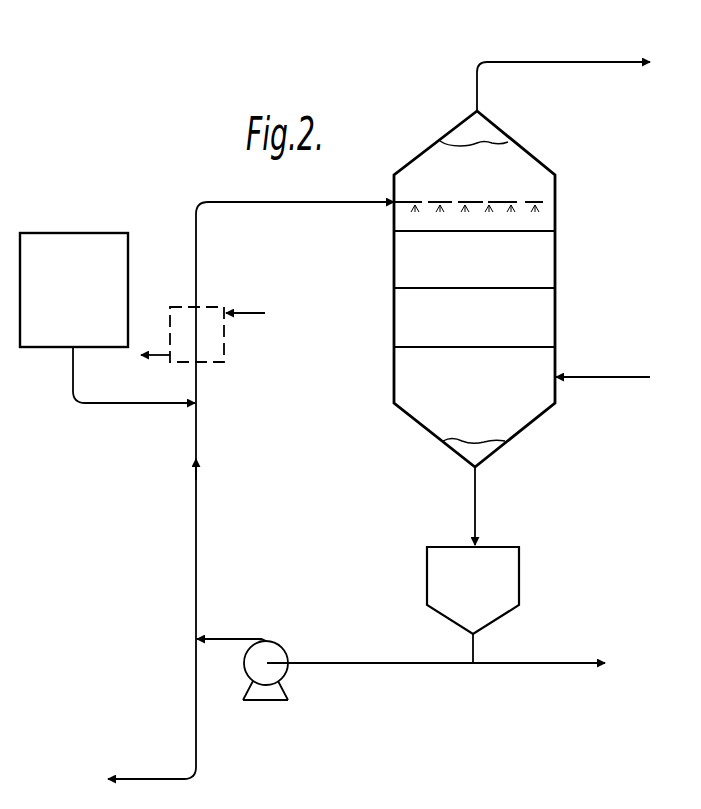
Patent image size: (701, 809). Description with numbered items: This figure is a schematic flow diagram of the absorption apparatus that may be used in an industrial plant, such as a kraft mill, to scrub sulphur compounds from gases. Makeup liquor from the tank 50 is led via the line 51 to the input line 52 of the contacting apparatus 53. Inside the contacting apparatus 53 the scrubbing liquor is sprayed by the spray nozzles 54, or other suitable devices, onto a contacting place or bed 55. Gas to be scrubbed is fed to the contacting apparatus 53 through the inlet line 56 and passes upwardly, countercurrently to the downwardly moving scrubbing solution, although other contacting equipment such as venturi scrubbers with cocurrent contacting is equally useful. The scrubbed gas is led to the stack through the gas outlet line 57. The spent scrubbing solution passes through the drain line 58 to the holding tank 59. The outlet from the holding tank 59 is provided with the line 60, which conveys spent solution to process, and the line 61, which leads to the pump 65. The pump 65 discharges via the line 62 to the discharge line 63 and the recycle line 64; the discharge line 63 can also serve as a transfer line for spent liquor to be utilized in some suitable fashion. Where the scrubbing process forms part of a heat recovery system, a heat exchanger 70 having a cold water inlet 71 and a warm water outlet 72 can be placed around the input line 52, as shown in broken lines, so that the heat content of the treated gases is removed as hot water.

The tank 50 is at (97, 232).
The line 51 is at (148, 410).
The input line 52 is at (198, 263).
The contacting apparatus 53 is at (522, 311).
The spray nozzles 54 is at (468, 202).
The contacting bed 55 is at (522, 231).
The inlet line 56 is at (622, 377).
The gas outlet line 57 is at (534, 62).
The drain line 58 is at (477, 512).
The holding tank 59 is at (505, 570).
The line 60 is at (540, 662).
The line 61 is at (362, 662).
The line 62 is at (235, 639).
The discharge line 63 is at (193, 706).
The recycle line 64 is at (197, 526).
The pump 65 is at (268, 651).
The heat exchanger 70 is at (218, 308).
The cold water inlet 71 is at (259, 313).
The warm water outlet 72 is at (165, 358).